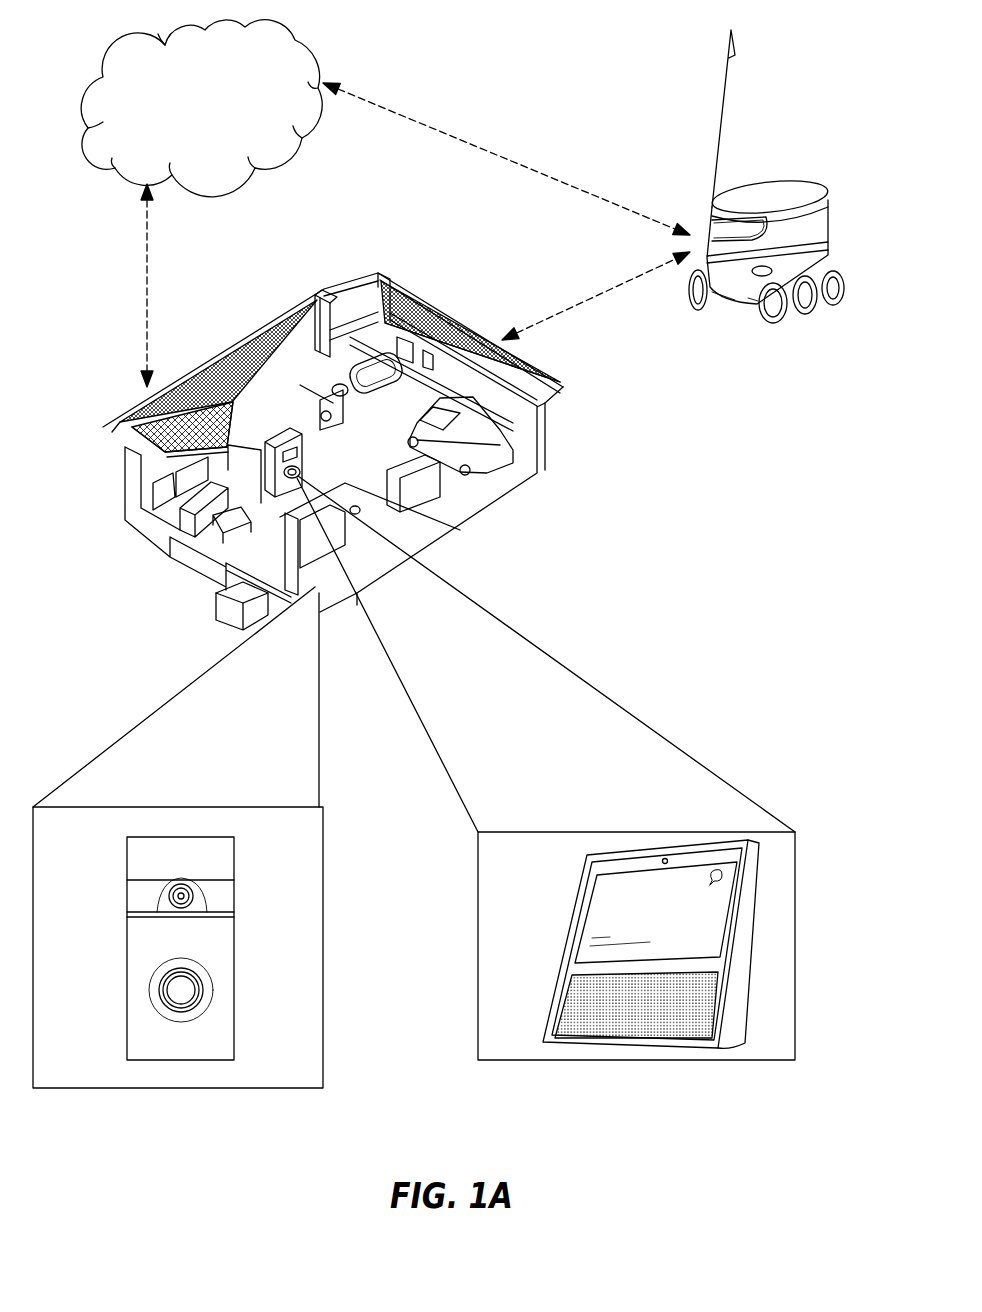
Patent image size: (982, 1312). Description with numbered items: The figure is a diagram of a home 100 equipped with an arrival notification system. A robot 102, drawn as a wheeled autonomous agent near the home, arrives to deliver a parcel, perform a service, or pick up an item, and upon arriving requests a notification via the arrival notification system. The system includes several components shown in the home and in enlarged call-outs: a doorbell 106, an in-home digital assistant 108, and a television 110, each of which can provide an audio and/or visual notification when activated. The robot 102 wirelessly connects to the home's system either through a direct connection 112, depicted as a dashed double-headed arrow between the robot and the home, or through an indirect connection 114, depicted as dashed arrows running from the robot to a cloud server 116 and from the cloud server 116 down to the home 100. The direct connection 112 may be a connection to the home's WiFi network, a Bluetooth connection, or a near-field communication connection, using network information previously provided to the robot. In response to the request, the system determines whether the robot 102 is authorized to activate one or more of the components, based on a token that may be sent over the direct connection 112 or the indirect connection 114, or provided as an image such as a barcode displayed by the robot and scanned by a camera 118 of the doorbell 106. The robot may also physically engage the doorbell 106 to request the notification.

The home 100 is at (517, 362).
The robot 102 is at (817, 226).
The doorbell 106 is at (215, 947).
The in-home digital assistant 108 is at (797, 938).
The television 110 is at (397, 507).
The direct connection 112 is at (597, 293).
The indirect connection 114 is at (127, 261).
The cloud server 116 is at (118, 42).
The camera 118 is at (172, 893).